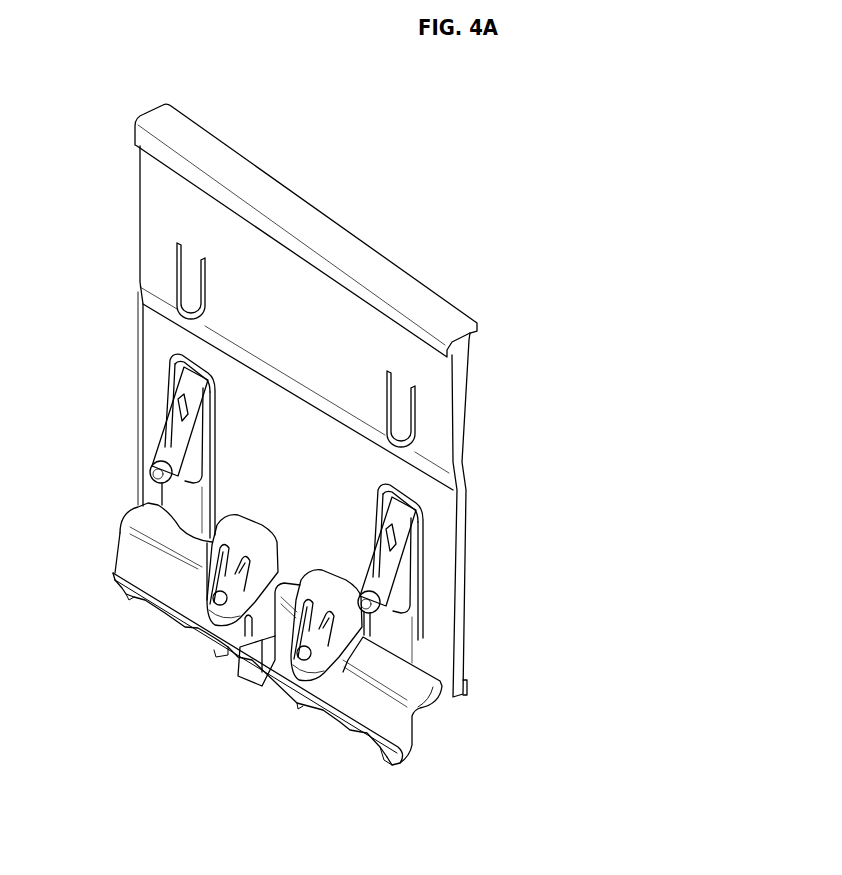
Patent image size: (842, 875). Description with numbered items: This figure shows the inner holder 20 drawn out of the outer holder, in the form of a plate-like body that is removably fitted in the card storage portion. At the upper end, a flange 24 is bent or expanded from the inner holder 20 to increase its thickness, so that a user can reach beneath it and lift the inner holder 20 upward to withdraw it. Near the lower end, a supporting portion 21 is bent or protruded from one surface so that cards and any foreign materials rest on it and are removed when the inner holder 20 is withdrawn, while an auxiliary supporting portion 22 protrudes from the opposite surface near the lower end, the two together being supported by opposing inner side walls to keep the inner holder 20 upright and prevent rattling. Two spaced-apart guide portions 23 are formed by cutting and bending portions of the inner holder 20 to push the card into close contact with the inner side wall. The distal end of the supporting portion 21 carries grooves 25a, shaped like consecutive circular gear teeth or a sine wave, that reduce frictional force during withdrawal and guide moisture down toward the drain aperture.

The inner holder 20 is at (510, 278).
The supporting portion 21 is at (423, 717).
The auxiliary supporting portion 22 is at (468, 683).
The guide portion 23 is at (165, 452).
The flange 24 is at (322, 212).
The grooves 25a is at (333, 712).